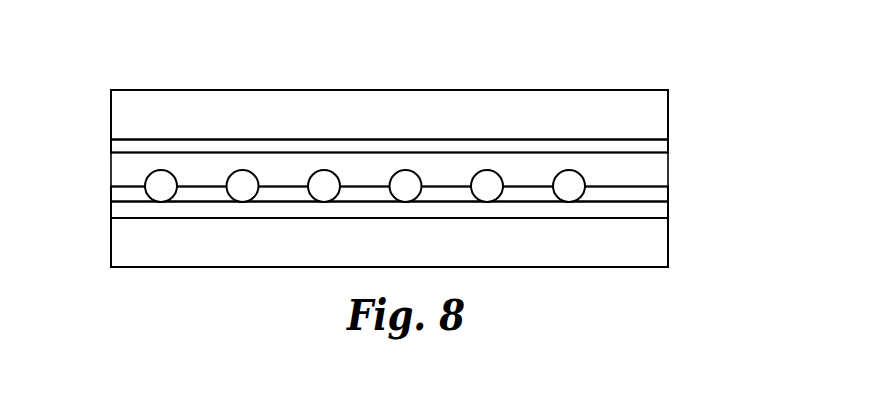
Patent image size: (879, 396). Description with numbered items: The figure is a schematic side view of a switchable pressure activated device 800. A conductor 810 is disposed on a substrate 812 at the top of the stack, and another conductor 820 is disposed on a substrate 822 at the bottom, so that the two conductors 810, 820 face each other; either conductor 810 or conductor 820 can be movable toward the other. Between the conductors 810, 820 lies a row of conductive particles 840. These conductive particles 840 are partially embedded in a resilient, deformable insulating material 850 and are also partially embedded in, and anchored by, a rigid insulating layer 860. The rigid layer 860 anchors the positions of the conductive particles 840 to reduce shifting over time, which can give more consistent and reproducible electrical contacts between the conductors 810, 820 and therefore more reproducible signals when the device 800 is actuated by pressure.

The switchable device 800 is at (392, 165).
The substrate 812 is at (658, 113).
The conductor 810 is at (660, 145).
The resilient, deformable insulating material 850 is at (125, 167).
The rigid insulating layer 860 is at (120, 193).
The conductor 820 is at (660, 211).
The substrate 822 is at (660, 243).
The conductive particles 840 is at (162, 193).